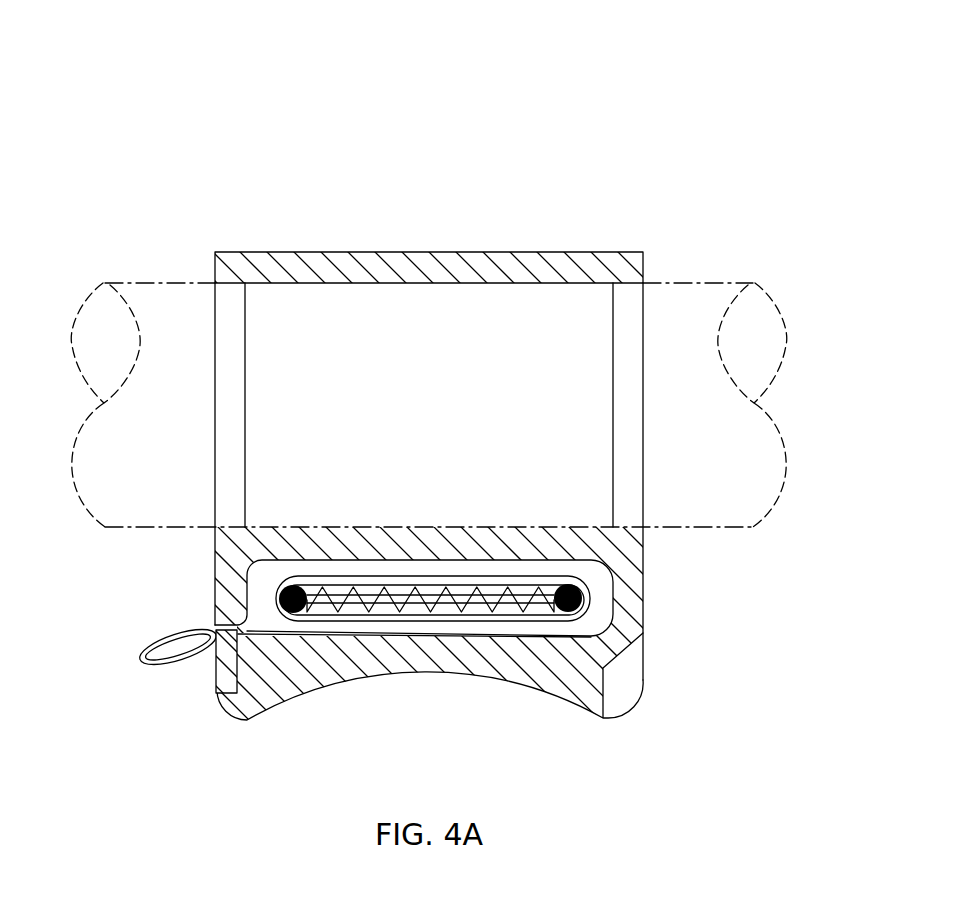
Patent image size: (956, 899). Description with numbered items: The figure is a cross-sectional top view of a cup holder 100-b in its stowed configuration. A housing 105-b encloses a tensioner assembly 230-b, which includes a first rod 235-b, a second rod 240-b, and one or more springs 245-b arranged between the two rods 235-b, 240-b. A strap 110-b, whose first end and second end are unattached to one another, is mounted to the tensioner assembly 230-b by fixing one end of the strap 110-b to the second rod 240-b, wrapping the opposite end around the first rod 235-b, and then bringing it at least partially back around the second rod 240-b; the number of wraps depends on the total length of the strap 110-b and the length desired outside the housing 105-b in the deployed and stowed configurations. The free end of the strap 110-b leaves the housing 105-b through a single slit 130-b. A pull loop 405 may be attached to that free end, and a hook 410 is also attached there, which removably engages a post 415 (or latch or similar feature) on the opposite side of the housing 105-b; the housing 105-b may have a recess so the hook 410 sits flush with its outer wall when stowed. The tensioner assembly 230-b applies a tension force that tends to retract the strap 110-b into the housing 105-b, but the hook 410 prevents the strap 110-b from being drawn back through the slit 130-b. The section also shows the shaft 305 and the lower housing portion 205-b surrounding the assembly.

The cup holder 100-b is at (123, 106).
The housing 105-b is at (267, 251).
The strap 110-b is at (290, 634).
The slit 130-b is at (216, 628).
The bottom housing 205-b is at (475, 680).
The tensioner assembly 230-b is at (263, 578).
The first rod 235-b is at (281, 603).
The second rod 240-b is at (582, 600).
The springs 245-b is at (398, 589).
The shaft 305 is at (700, 282).
The pull loop 405 is at (142, 656).
The hook 410 is at (220, 672).
The post 415 is at (636, 683).